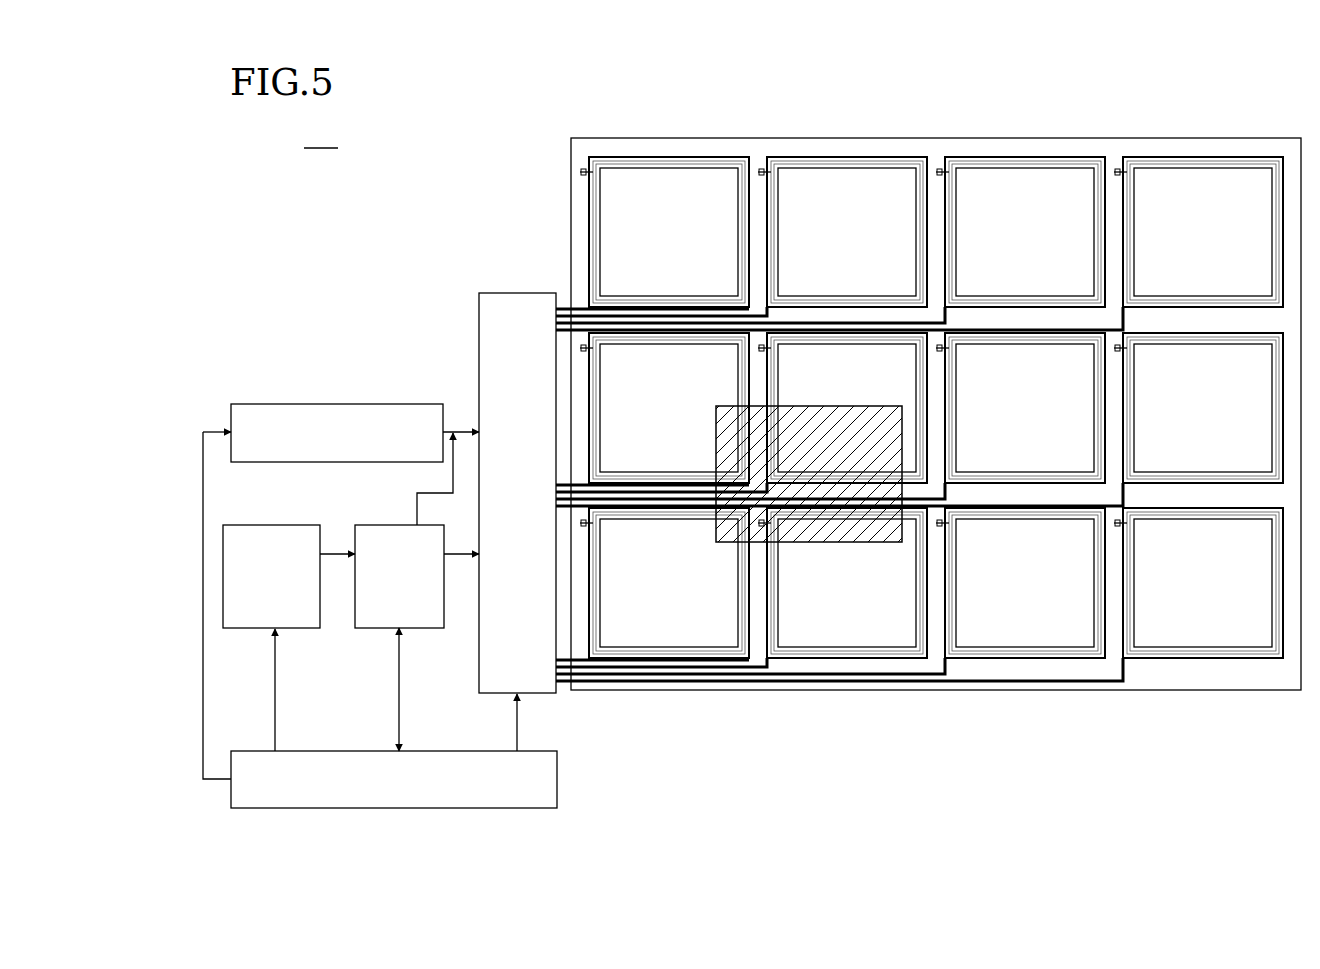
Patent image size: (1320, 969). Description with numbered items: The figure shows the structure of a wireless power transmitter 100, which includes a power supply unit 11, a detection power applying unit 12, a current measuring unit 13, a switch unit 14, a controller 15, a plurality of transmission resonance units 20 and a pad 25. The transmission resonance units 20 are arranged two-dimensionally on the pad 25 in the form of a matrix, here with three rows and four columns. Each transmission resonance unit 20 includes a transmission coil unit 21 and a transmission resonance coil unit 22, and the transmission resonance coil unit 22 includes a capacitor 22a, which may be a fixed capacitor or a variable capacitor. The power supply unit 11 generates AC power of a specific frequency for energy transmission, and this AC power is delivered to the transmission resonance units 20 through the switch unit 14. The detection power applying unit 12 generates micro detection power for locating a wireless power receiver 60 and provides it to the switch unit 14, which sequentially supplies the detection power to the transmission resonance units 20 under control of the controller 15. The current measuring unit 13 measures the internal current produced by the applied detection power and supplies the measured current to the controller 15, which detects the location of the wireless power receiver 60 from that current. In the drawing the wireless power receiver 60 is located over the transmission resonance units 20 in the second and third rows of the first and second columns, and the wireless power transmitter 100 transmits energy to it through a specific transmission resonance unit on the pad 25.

The wireless power transmitter 100 is at (321, 138).
The power supply unit 11 is at (349, 404).
The detection power applying unit 12 is at (277, 525).
The current measuring unit 13 is at (395, 525).
The switch unit 14 is at (519, 293).
The controller 15 is at (349, 751).
The transmission resonance unit 20 is at (898, 377).
The transmission coil unit 21 is at (669, 202).
The transmission resonance coil unit 22 is at (669, 201).
The capacitor 22a is at (553, 163).
The pad 25 is at (936, 138).
The wireless power receiver 60 is at (716, 436).